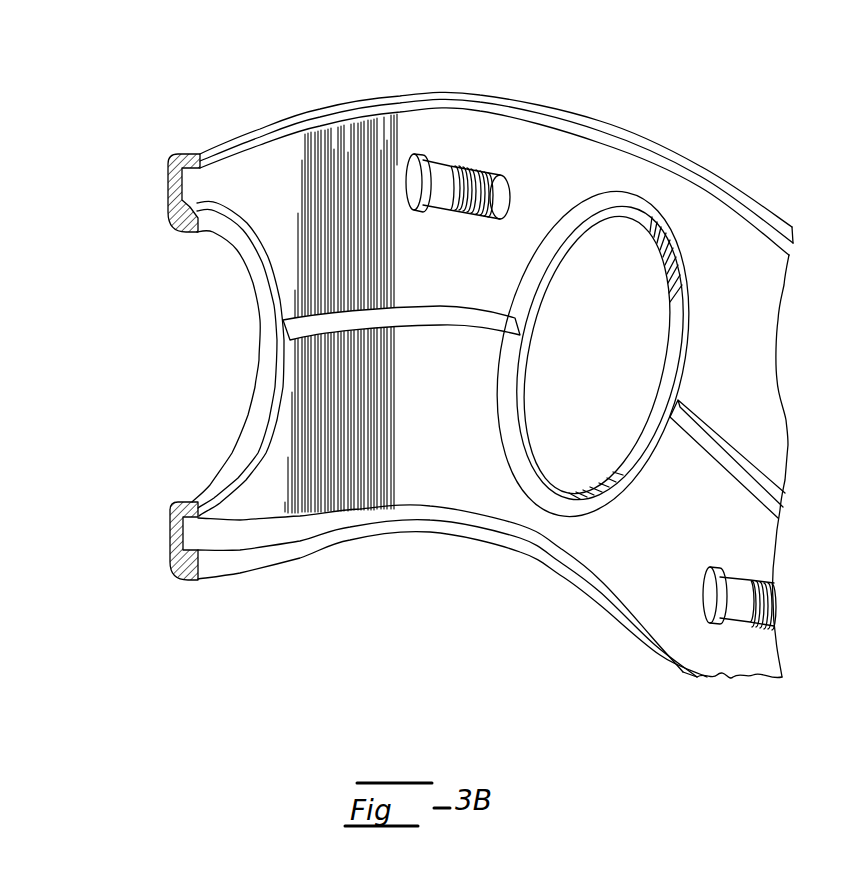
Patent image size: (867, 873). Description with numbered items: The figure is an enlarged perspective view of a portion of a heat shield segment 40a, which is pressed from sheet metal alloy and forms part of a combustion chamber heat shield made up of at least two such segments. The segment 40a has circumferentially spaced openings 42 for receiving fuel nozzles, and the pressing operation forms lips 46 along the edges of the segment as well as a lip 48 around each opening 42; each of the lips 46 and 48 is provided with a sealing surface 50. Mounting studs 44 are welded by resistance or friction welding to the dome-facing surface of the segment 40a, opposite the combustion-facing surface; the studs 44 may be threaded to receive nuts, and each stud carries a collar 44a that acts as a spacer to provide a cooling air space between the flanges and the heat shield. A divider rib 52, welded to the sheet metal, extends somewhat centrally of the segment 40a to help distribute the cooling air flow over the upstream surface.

The heat shield segment 40a is at (391, 531).
The opening 42 is at (673, 283).
The mounting stud 44 is at (758, 602).
The collar 44a is at (418, 172).
The lip 46 is at (481, 111).
The lip 48 is at (689, 334).
The sealing surface 50 is at (392, 108).
The divider rib 52 is at (402, 326).